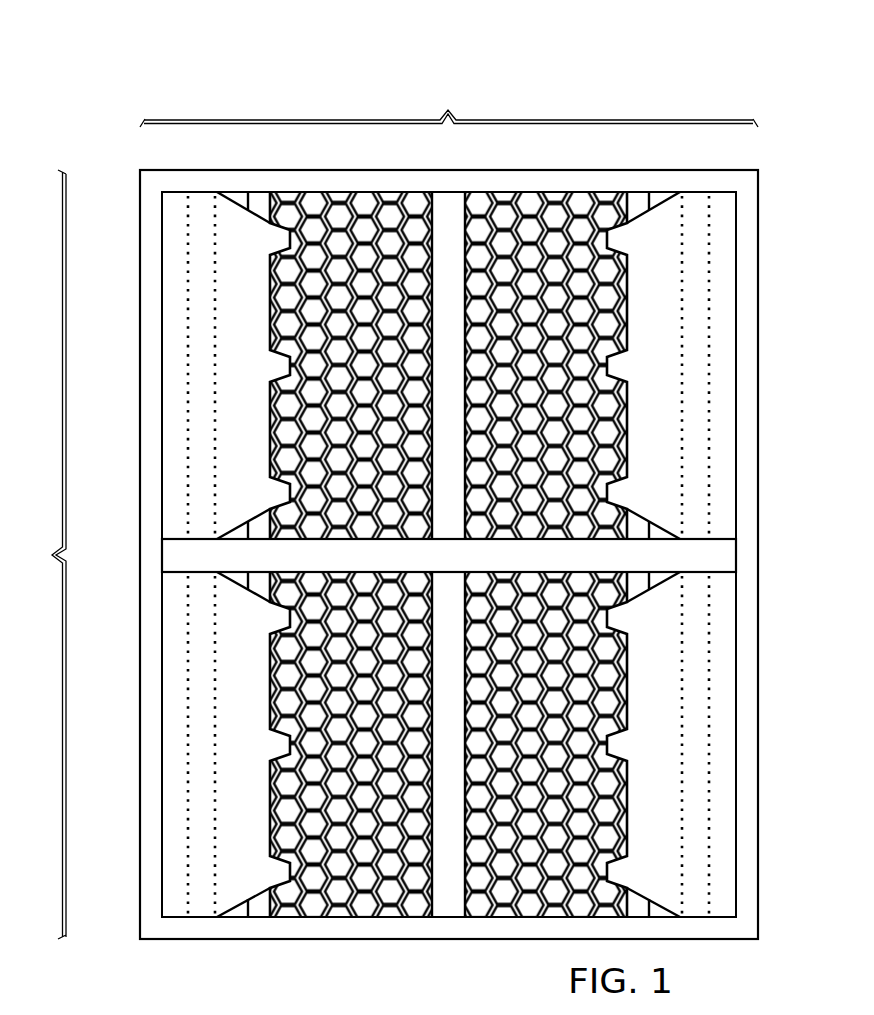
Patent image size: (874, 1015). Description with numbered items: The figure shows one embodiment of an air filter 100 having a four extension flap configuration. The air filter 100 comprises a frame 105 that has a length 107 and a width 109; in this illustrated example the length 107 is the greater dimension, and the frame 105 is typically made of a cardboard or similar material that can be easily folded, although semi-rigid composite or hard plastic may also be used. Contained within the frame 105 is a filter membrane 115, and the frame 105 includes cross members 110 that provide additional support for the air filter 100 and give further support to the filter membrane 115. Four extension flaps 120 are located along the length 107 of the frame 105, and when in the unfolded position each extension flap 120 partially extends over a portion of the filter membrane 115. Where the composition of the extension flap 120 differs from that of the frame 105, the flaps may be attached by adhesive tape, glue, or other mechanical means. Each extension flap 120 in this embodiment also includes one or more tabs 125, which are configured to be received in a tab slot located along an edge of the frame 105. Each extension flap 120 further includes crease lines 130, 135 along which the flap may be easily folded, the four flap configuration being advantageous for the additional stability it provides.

The air filter 100 is at (243, 74).
The frame 105 is at (758, 212).
The length 107 is at (38, 554).
The width 109 is at (449, 104).
The cross members 110 is at (724, 553).
The filter membrane 115 is at (553, 217).
The extension flap 120 is at (173, 332).
The tabs 125 is at (620, 240).
The crease line 130 is at (188, 291).
The crease line 135 is at (216, 232).